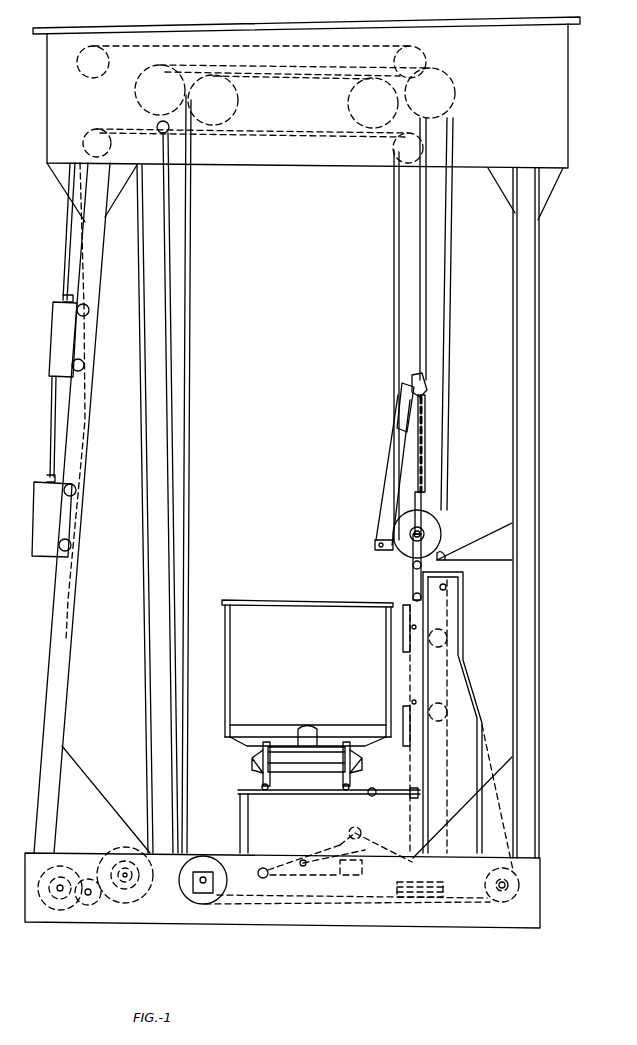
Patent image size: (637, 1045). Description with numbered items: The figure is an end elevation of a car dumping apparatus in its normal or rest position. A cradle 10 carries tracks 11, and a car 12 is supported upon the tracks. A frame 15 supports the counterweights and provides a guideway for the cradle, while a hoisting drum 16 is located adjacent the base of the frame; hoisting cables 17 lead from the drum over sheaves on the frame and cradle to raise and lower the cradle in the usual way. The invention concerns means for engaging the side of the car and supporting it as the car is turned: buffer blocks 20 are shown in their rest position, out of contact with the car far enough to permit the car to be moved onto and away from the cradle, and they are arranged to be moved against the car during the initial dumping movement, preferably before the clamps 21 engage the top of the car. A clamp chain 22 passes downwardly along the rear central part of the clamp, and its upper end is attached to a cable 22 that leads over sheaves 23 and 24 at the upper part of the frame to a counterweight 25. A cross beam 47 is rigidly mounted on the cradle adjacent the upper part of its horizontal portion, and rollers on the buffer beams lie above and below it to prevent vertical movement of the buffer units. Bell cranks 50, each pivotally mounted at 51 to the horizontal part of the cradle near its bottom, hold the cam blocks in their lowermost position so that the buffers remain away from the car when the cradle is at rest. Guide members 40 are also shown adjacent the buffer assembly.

The cradle 10 is at (468, 690).
The tracks 11 is at (258, 784).
The car 12 is at (235, 660).
The frame 15 is at (531, 302).
The hoisting drum 16 is at (118, 848).
The hoisting cables 17 is at (137, 609).
The buffer blocks 20 is at (410, 628).
The clamps 21 is at (388, 556).
The clamp chain and cable 22 is at (437, 204).
The sheave 23 is at (396, 53).
The sheave 24 is at (96, 70).
The counterweight 25 is at (71, 509).
The guide blocks 40 is at (404, 684).
The cross beam 47 is at (370, 792).
The bell cranks 50 is at (335, 840).
The pivot 51 is at (363, 840).